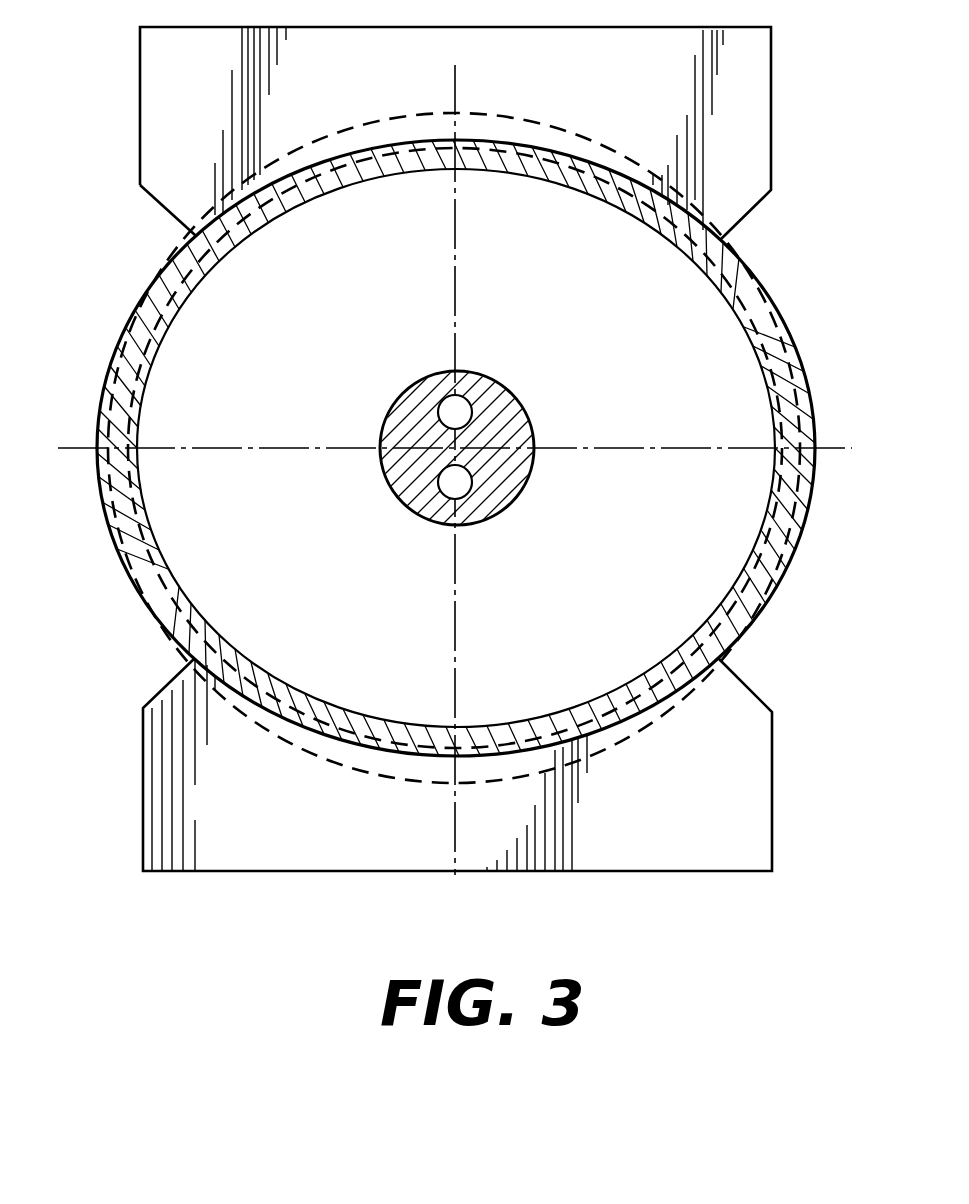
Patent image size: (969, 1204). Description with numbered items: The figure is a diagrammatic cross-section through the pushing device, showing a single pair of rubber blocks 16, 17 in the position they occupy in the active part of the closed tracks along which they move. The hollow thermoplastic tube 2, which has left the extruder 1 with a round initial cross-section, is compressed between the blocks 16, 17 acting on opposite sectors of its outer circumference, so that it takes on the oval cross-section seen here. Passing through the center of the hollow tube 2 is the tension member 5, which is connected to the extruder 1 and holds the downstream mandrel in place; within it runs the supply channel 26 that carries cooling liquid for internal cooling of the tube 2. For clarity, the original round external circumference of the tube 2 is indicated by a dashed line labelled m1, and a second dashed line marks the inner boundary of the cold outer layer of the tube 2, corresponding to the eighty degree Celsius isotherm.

The extruder 1 is at (777, 328).
The hollow tube 2 is at (770, 365).
The tension member 5 is at (510, 428).
The supply channel 26 is at (438, 406).
The rubber block 16 is at (747, 97).
The rubber block 17 is at (730, 803).
The dashed reference circle m1 is at (573, 137).